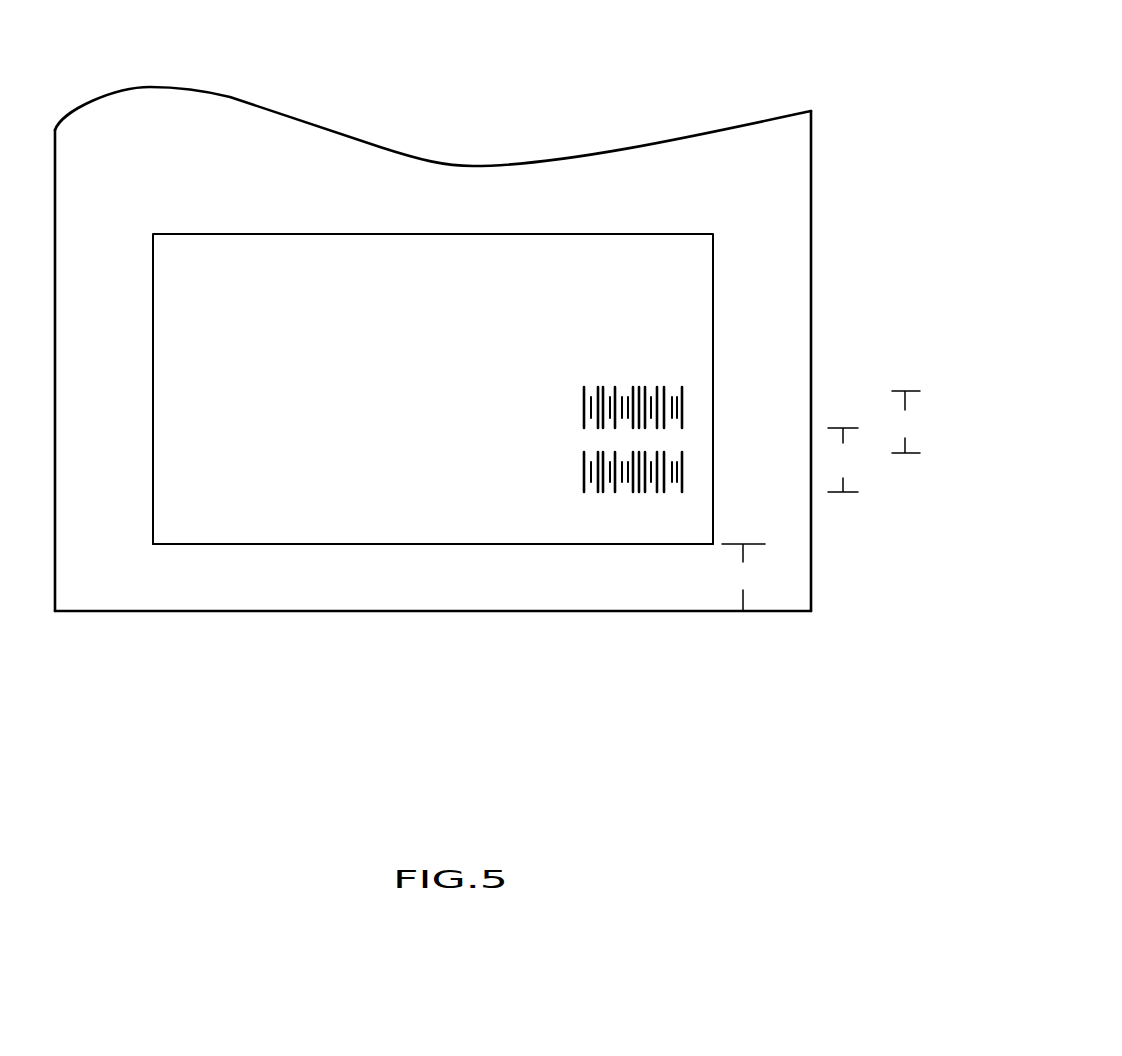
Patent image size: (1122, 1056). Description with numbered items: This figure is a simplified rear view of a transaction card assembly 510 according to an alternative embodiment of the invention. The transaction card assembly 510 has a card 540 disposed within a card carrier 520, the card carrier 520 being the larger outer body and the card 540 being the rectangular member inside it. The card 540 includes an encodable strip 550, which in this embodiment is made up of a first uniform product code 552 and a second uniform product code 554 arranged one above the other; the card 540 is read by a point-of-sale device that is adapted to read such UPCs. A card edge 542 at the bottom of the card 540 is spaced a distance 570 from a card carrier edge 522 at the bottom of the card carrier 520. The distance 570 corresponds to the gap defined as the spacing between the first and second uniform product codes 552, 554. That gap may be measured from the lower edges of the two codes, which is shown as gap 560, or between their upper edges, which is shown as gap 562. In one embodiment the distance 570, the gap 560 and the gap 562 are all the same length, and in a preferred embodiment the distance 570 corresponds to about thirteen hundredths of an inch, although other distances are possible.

The transaction card assembly 510 is at (448, 389).
The card carrier 520 is at (728, 146).
The card carrier edge 522 is at (522, 612).
The card 540 is at (433, 418).
The card edge 542 is at (370, 545).
The encodable strip 550 is at (579, 419).
The first uniform product code (UPC) 552 is at (595, 490).
The second uniform product code (UPC) 554 is at (583, 400).
The gap 560 is at (843, 460).
The gap 562 is at (905, 422).
The distance 570 is at (743, 577).